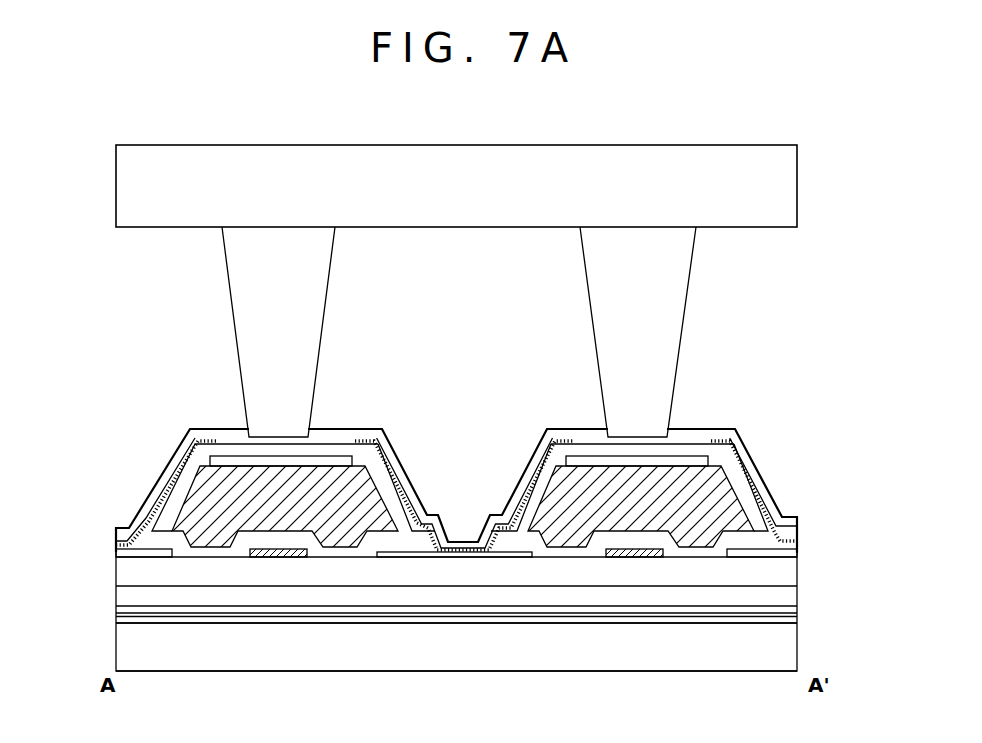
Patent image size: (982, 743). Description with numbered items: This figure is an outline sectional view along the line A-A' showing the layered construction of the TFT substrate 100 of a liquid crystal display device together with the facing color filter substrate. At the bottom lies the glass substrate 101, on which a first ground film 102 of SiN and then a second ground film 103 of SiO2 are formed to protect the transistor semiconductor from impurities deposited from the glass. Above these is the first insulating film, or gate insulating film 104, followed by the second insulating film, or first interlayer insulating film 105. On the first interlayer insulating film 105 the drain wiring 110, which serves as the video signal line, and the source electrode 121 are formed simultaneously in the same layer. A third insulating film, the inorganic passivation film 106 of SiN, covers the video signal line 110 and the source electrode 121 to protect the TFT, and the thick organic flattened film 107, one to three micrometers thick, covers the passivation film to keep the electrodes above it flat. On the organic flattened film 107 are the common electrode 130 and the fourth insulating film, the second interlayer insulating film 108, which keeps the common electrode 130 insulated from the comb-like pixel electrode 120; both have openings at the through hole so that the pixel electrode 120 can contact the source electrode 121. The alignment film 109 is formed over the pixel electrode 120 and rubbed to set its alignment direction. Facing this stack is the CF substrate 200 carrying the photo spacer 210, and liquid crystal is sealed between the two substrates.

The TFT substrate 100 is at (107, 605).
The glass substrate 101 is at (742, 664).
The first ground film 102 is at (793, 640).
The second ground film 103 is at (793, 616).
The first insulating film (gate insulating film) 104 is at (793, 596).
The second insulating film (first interlayer insulating film) 105 is at (793, 572).
The third insulating film (inorganic passivation film) 106 is at (793, 527).
The organic flattened film 107 is at (708, 485).
The fourth insulating film (second interlayer insulating film) 108 is at (726, 456).
The alignment film 109 is at (704, 431).
The drain wiring (video signal line) 110 is at (272, 557).
The pixel electrode 120 is at (732, 442).
The source electrode 121 is at (797, 553).
The common electrode 130 is at (712, 463).
The CF substrate 200 is at (105, 196).
The photo spacer 210 is at (314, 300).